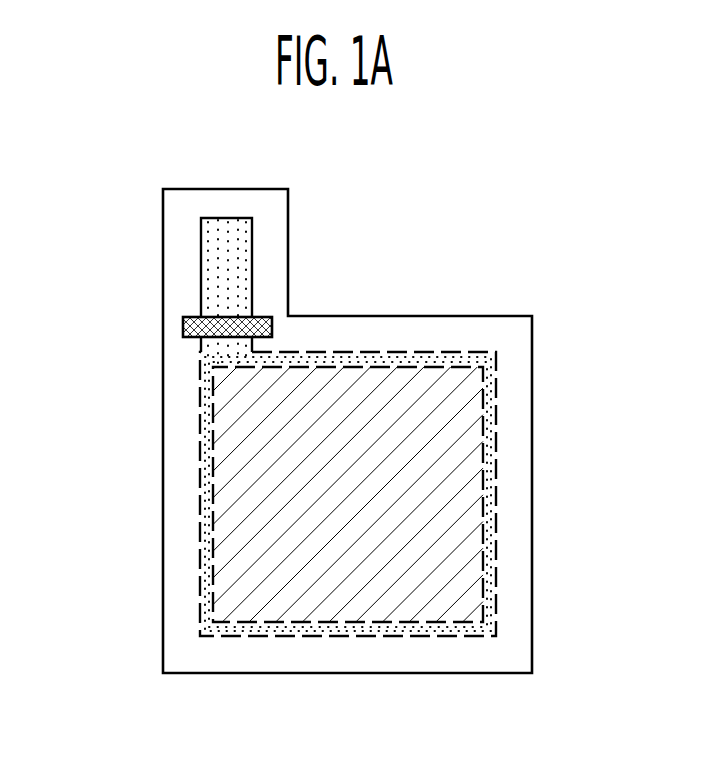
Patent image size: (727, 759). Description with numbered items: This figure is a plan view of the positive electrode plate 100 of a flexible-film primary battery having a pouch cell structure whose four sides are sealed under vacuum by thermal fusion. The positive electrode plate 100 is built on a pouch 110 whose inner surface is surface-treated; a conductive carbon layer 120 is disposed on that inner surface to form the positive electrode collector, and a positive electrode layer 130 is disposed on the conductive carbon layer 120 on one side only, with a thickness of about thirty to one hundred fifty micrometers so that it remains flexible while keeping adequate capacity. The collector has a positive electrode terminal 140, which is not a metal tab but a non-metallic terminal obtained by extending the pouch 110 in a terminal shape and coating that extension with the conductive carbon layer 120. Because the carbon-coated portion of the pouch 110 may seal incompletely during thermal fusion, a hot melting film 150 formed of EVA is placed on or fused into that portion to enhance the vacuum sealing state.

The positive electrode plate 100 is at (438, 283).
The pouch 110 is at (163, 405).
The conductive carbon layer 120 is at (203, 495).
The positive electrode layer 130 is at (227, 582).
The positive electrode terminal 140 is at (252, 218).
The hot melting film 150 is at (263, 318).